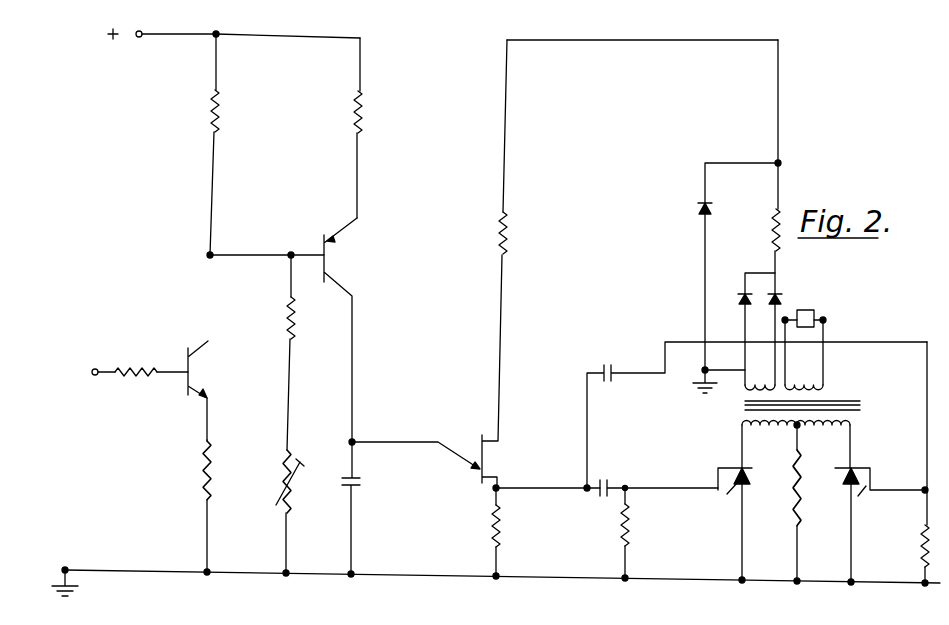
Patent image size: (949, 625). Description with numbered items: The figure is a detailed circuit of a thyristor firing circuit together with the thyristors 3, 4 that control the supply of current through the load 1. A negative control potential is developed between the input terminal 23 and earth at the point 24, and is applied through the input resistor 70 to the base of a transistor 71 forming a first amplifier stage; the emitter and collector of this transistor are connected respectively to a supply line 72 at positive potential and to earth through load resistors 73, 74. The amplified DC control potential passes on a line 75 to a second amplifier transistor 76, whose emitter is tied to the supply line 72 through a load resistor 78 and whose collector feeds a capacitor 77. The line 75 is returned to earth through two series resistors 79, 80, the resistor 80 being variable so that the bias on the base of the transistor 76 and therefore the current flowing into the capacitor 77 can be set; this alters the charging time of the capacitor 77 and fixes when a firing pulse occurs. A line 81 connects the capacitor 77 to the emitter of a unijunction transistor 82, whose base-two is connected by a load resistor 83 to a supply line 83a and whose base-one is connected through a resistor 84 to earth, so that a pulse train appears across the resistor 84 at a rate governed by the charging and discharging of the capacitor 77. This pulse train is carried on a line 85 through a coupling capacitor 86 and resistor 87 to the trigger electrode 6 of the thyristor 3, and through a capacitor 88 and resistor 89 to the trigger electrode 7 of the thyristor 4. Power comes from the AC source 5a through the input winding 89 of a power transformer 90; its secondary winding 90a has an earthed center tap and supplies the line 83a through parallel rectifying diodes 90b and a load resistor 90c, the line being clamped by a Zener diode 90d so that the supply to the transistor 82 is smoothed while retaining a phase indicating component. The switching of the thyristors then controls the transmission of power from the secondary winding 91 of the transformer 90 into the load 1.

The supply line 72 is at (176, 35).
The load resistor 73 is at (220, 125).
The load resistor 78 is at (364, 123).
The line 75 is at (254, 255).
The second amplifier transistor 76 is at (336, 265).
The resistor 79 is at (294, 332).
The transistor 71 is at (198, 344).
The input terminal 23 is at (104, 355).
The input resistor 70 is at (151, 357).
The load resistor 74 is at (203, 468).
The variable resistor 80 is at (281, 478).
The capacitor 77 is at (342, 482).
The earth point 24 is at (67, 569).
The line 81 is at (396, 441).
The unijunction transistor 82 is at (471, 442).
The load resistor 83 is at (509, 247).
The supply line 83a is at (653, 33).
The line 85 is at (541, 488).
The resistor 84 is at (507, 527).
The capacitor 86 is at (607, 480).
The resistor 87 is at (634, 528).
The capacitor 88 is at (609, 365).
The load resistor 90c is at (770, 219).
The Zener diode 90d is at (698, 216).
The rectifying diodes 90b is at (770, 300).
The secondary winding 90a is at (770, 384).
The AC supply 5a is at (814, 312).
The resistor / input winding 89 is at (826, 381).
The power transformer 90 is at (742, 402).
The secondary winding 91 is at (845, 427).
The load 1 is at (803, 492).
The trigger electrode 6 is at (717, 484).
The thyristor 3 is at (722, 501).
The trigger electrode 7 is at (872, 482).
The thyristor 4 is at (848, 488).